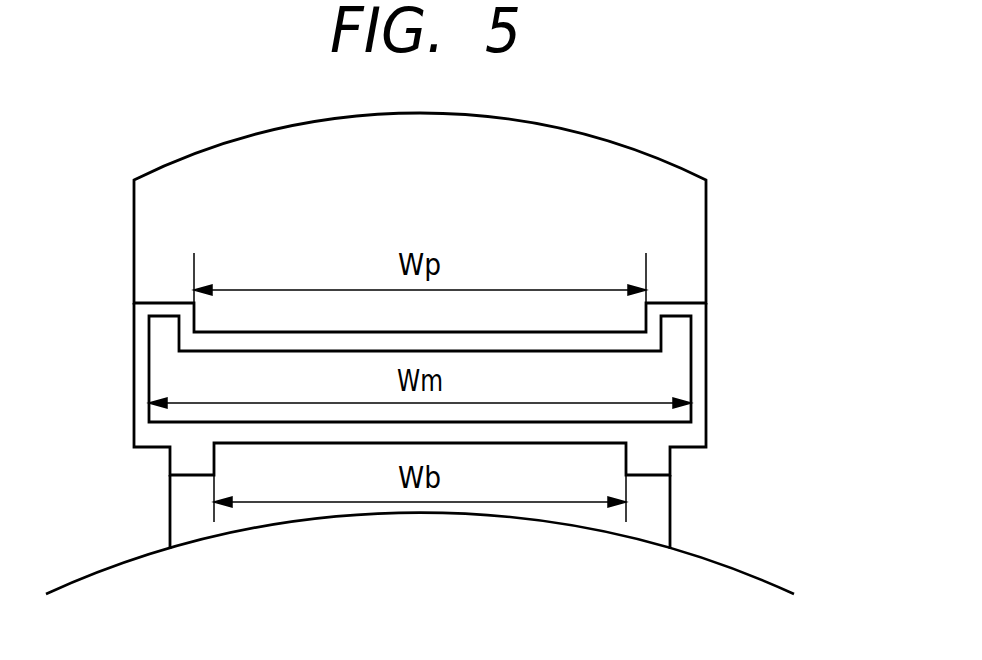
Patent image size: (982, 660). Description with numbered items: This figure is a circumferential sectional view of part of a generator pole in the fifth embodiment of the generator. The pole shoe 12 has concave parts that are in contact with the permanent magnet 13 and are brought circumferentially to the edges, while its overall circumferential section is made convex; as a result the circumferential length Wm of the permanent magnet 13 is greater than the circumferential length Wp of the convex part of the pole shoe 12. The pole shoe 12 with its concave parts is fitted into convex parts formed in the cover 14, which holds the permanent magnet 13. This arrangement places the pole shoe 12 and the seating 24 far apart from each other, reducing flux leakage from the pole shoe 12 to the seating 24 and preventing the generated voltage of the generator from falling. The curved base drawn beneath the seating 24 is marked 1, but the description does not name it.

The drum 1 is at (758, 601).
The pole shoe 12 is at (681, 214).
The permanent magnet 13 is at (167, 372).
The cover 14 is at (682, 435).
The seating 24 is at (198, 505).